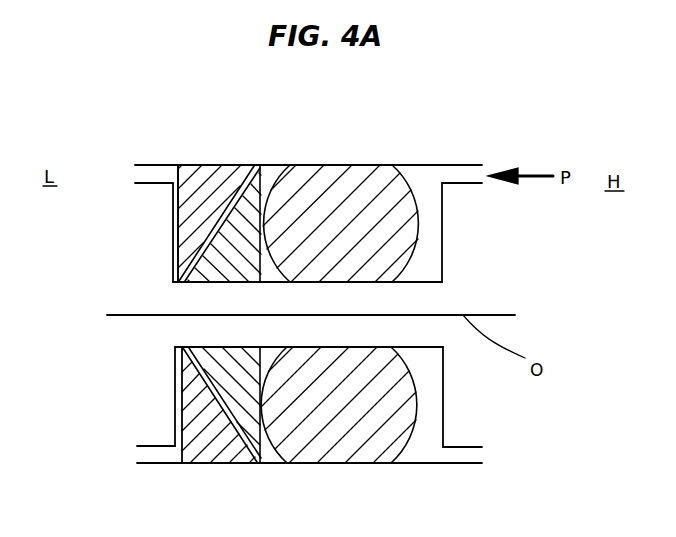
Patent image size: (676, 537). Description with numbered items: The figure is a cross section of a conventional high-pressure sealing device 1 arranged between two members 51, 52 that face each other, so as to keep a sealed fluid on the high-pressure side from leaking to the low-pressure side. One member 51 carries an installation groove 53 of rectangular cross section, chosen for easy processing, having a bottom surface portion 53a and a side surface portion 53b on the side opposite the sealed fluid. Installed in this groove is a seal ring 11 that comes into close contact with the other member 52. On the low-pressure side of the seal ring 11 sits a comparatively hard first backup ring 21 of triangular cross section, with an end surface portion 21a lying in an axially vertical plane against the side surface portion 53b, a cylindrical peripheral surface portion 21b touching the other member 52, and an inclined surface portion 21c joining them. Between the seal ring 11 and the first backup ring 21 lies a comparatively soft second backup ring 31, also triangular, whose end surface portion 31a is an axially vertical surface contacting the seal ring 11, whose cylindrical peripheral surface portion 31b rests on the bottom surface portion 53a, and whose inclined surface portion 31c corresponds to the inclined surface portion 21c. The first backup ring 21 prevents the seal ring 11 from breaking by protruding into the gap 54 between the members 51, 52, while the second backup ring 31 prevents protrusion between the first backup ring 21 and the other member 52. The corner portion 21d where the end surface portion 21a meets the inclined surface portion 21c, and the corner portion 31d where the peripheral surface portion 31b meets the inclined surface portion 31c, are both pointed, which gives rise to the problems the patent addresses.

The sealing device 1 is at (414, 178).
The seal ring 11 is at (350, 190).
The first backup ring 21 is at (202, 177).
The end surface portion 21a is at (232, 423).
The peripheral surface portion 21b is at (223, 465).
The inclined surface portion 21c is at (178, 385).
The corner portion 21d is at (178, 276).
The second backup ring 31 is at (232, 180).
The end surface portion 31a is at (298, 447).
The peripheral surface portion 31b is at (218, 346).
The inclined surface portion 31c is at (175, 446).
The corner portion 31d is at (178, 352).
The member 51 is at (463, 390).
The member 52 is at (455, 155).
The installation groove 53 is at (430, 229).
The bottom surface portion 53a is at (425, 281).
The side surface portion 53b is at (178, 212).
The gap 54 is at (163, 455).